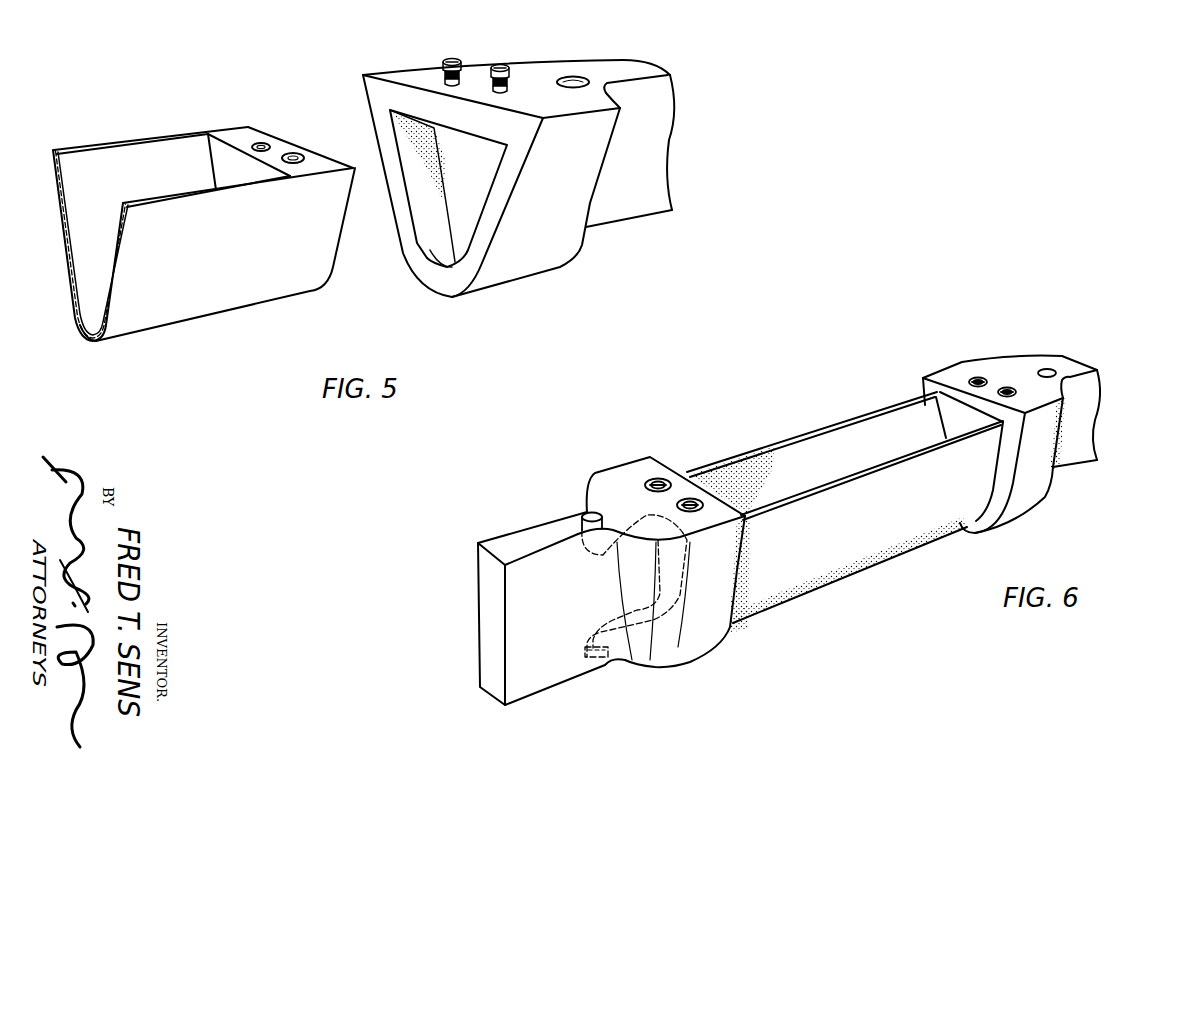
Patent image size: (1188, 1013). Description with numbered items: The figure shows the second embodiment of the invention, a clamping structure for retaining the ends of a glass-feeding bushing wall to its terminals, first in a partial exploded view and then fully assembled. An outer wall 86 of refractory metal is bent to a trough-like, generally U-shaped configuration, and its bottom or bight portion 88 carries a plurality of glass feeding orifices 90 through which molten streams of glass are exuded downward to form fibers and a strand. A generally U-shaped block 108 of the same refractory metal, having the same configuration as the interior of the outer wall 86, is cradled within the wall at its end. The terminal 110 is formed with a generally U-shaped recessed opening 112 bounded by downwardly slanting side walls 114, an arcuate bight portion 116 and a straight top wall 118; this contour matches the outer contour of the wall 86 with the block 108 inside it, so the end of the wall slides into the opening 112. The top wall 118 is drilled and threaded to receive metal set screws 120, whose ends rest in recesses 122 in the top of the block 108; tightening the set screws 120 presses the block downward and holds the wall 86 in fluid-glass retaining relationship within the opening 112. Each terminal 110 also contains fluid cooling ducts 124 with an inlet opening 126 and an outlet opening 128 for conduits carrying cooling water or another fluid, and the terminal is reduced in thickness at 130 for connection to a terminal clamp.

In FIG. 5, the outer wall 86 is at (99, 147).
In FIG. 6, the outer wall 86 is at (773, 450).
In FIG. 5, the bight portion 88 is at (95, 341).
In FIG. 6, the bight portion 88 is at (803, 590).
In FIG. 5, the glass feeding orifices 90 is at (94, 327).
In FIG. 5, the U-shaped block 108 is at (240, 134).
In FIG. 6, the U-shaped block 108 is at (950, 412).
In FIG. 5, the recesses 122 is at (268, 146).
In FIG. 5, the terminal 110 is at (540, 73).
In FIG. 6, the terminal 110 is at (620, 475).
In FIG. 5, the U-shaped recessed opening 112 is at (445, 237).
In FIG. 5, the side walls 114 is at (425, 183).
In FIG. 5, the arcuate bight portion 116 is at (442, 256).
In FIG. 5, the top wall 118 is at (400, 100).
In FIG. 6, the top wall 118 is at (947, 392).
In FIG. 5, the set screws 120 is at (500, 66).
In FIG. 6, the set screws 120 is at (692, 499).
In FIG. 5, the inlet opening 126 is at (581, 80).
In FIG. 6, the inlet opening 126 is at (590, 514).
In FIG. 5, the reduced thickness portion 130 is at (668, 75).
In FIG. 6, the reduced thickness portion 130 is at (520, 532).
In FIG. 6, the fluid cooling ducts 124 is at (647, 620).
In FIG. 6, the outlet opening 128 is at (592, 658).